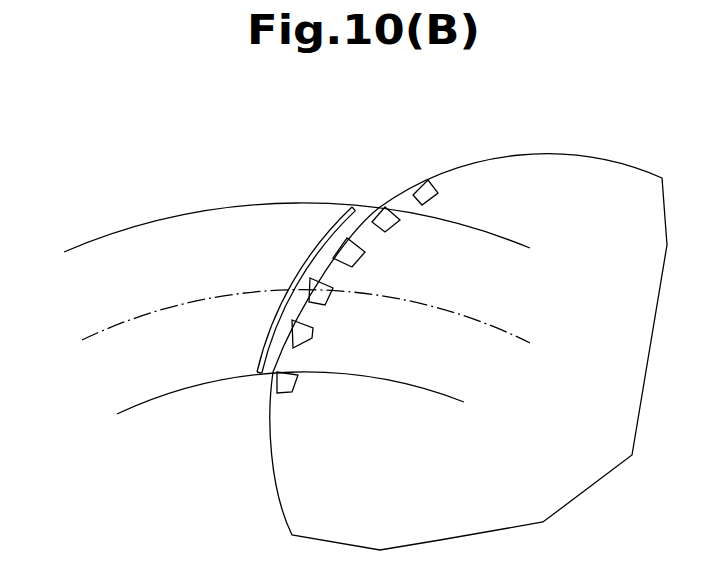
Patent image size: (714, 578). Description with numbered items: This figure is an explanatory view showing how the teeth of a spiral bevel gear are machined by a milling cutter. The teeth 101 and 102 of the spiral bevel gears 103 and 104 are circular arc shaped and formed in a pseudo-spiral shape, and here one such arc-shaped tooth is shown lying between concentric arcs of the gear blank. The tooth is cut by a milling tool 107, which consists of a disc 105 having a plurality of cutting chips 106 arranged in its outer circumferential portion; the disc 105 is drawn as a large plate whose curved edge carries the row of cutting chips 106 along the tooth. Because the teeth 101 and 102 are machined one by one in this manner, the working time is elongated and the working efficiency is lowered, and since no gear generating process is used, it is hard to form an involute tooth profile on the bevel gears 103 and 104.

The tooth 101 is at (362, 210).
The tooth 102 is at (343, 259).
The spiral bevel gear 103 is at (120, 242).
The spiral bevel gear 104 is at (289, 297).
The disc 105 is at (505, 156).
The cutting chips 106 is at (438, 190).
The milling tool 107 is at (468, 328).